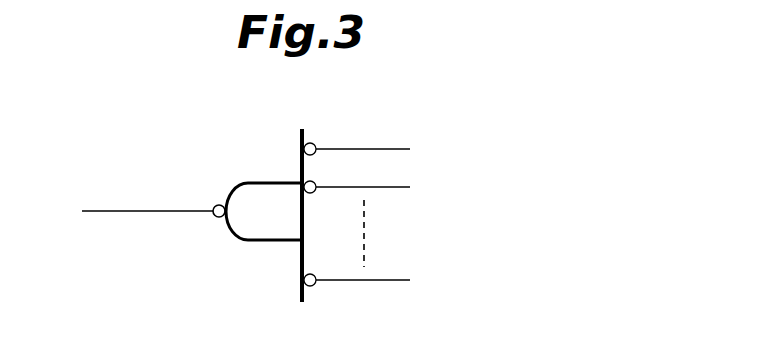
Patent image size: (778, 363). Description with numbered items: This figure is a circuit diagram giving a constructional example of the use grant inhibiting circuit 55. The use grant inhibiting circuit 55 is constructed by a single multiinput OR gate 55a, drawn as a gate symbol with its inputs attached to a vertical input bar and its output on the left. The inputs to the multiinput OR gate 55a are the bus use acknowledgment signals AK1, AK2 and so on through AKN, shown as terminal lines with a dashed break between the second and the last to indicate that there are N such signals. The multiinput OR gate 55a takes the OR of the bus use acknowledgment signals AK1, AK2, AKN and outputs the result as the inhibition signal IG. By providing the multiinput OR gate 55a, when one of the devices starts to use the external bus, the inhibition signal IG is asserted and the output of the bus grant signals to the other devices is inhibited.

The use grant inhibiting circuit 55 is at (535, 168).
The multiinput OR gate 55a is at (232, 234).
The inhibition signal IG is at (134, 212).
The bus use acknowledgment signal AK1 is at (380, 149).
The bus use acknowledgment signal AK2 is at (380, 187).
The bus use acknowledgment signal AKN is at (381, 280).